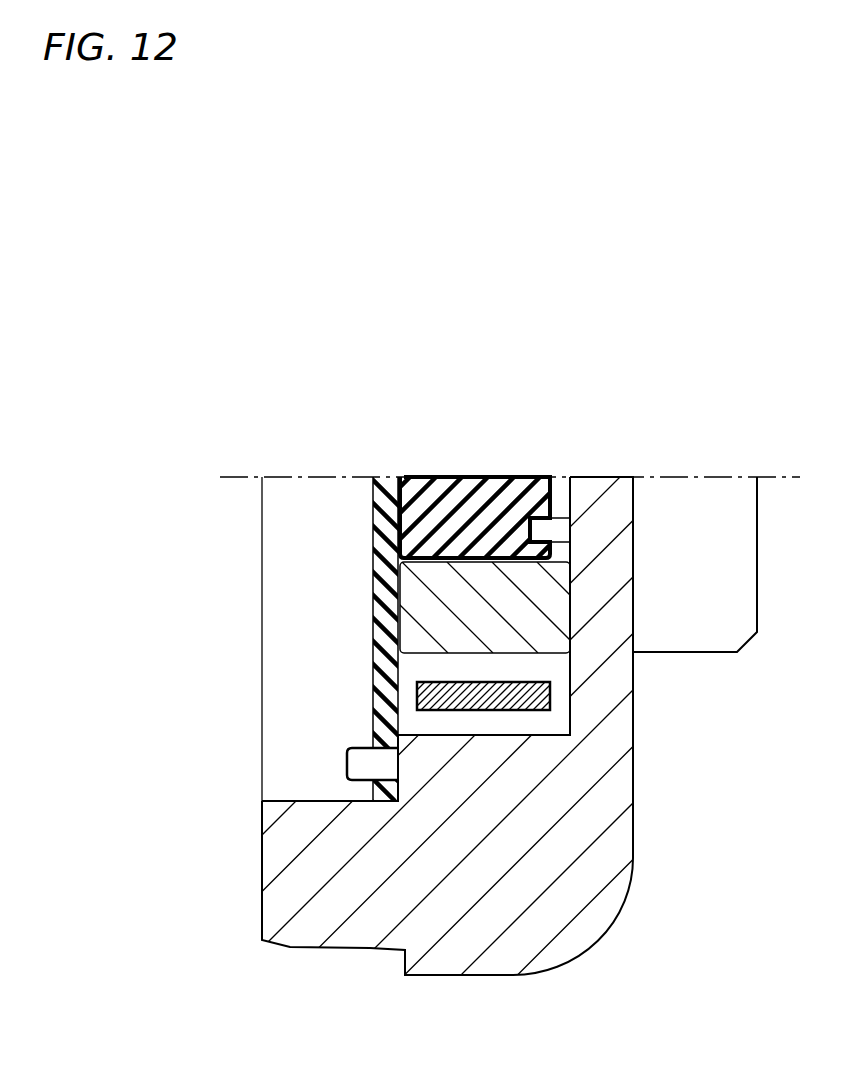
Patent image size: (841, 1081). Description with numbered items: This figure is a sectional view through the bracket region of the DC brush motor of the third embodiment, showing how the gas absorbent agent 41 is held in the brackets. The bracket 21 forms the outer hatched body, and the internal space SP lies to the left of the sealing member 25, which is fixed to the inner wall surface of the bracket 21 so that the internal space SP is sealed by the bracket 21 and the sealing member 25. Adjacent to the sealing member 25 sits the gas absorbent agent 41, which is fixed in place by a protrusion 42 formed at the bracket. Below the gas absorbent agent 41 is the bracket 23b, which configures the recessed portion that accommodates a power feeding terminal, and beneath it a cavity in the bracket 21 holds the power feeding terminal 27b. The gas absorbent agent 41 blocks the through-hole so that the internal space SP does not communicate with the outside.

The bracket 21 is at (613, 785).
The bracket 23b is at (495, 618).
The sealing member 25 is at (384, 495).
The power feeding terminal 27b is at (550, 702).
The gas absorbent agent 41 is at (478, 493).
The protrusion 42 is at (557, 527).
The internal space SP is at (308, 492).